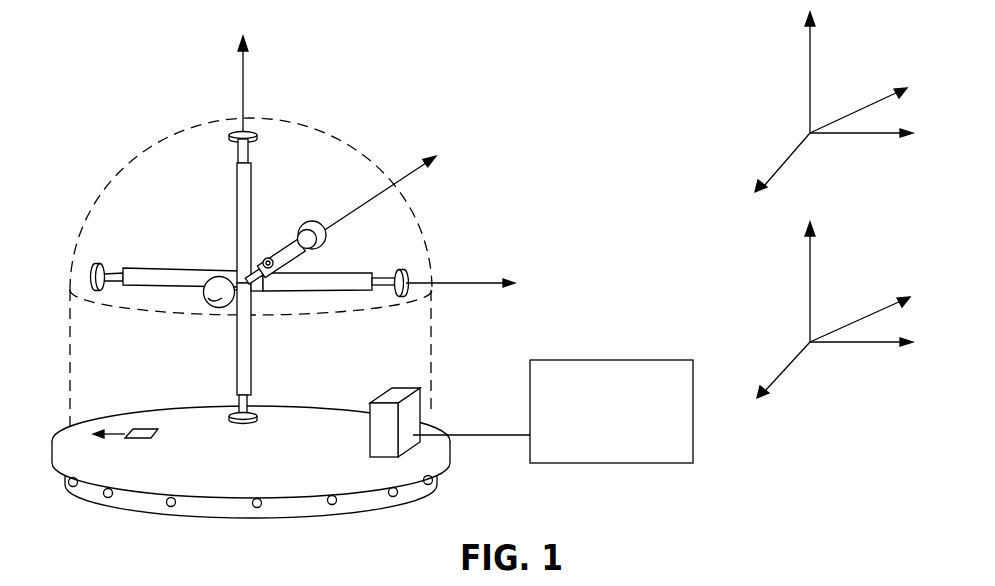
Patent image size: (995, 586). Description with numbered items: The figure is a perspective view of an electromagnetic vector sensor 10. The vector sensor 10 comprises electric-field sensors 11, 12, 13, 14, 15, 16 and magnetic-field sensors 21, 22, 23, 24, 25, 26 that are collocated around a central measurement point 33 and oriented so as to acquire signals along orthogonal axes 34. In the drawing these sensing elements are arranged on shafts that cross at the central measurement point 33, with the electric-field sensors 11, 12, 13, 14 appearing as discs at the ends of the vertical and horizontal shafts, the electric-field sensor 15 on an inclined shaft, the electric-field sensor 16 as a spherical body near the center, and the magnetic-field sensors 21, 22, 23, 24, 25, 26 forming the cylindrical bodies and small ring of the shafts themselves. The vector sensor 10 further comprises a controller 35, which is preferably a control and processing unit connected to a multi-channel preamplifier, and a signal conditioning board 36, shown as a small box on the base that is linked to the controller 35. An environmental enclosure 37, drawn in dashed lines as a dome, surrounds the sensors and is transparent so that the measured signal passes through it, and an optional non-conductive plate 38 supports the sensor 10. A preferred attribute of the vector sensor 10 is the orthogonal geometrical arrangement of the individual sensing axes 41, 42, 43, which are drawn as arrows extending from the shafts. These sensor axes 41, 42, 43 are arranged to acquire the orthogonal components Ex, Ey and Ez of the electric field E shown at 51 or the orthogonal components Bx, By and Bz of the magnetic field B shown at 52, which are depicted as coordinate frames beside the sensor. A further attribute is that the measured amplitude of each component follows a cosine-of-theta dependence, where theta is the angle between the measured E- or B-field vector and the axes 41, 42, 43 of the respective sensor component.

The electromagnetic vector sensor 10 is at (506, 159).
The electric-field sensor 11 is at (256, 139).
The electric-field sensor 12 is at (405, 269).
The electric-field sensor 13 is at (256, 420).
The electric-field sensor 14 is at (93, 267).
The electric-field sensor 15 is at (318, 223).
The electric-field sensor 16 is at (218, 299).
The magnetic-field sensor 21 is at (237, 223).
The magnetic-field sensor 22 is at (323, 273).
The magnetic-field sensor 23 is at (249, 345).
The magnetic-field sensor 24 is at (174, 275).
The magnetic-field sensor 25 is at (271, 258).
The magnetic-field sensor 26 is at (235, 282).
The central measurement point 33 is at (252, 284).
The orthogonal axes 34 is at (232, 77).
The controller 35 is at (634, 360).
The signal conditioning board 36 is at (413, 432).
The environmental enclosure 37 is at (53, 364).
The non-conductive plate 38 is at (147, 500).
The sensing axis 41 is at (463, 286).
The sensing axis 42 is at (245, 92).
The sensing axis 43 is at (420, 167).
The electric field E 51 is at (768, 95).
The magnetic field B 52 is at (784, 288).